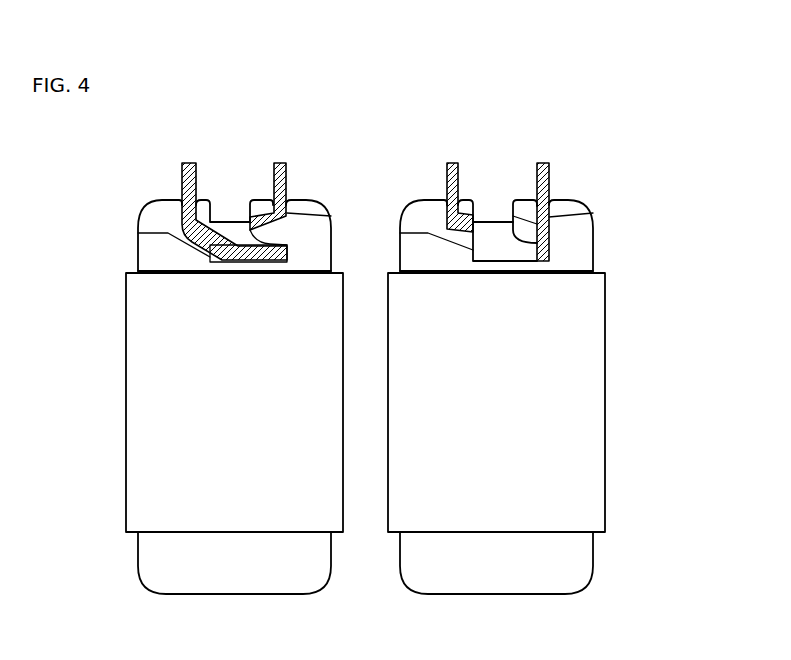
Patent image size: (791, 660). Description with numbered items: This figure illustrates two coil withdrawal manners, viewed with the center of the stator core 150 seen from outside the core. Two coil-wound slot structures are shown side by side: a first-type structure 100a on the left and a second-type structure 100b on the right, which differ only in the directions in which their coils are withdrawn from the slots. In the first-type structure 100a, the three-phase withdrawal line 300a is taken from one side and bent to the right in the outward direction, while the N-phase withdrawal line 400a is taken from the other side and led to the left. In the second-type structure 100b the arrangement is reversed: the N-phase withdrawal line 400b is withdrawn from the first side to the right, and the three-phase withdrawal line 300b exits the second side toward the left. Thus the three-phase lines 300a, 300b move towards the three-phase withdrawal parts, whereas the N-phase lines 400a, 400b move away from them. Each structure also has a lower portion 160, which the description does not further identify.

The first-type structure 100a is at (228, 395).
The second-type structure 100b is at (501, 382).
The stator core 150 is at (135, 323).
The bottom cap 160 is at (150, 560).
The three-phase withdrawal line 300a is at (182, 175).
The three-phase withdrawal line 300b is at (549, 182).
The N-phase withdrawal line 400a is at (287, 180).
The N-phase withdrawal line 400b is at (447, 181).